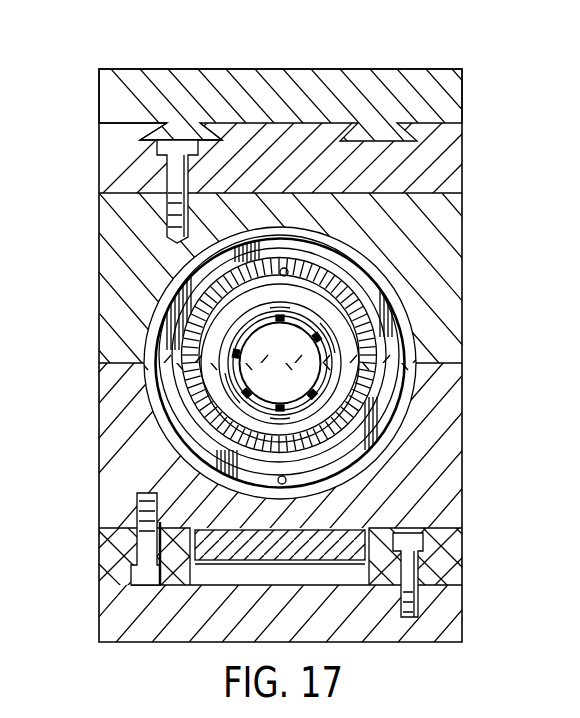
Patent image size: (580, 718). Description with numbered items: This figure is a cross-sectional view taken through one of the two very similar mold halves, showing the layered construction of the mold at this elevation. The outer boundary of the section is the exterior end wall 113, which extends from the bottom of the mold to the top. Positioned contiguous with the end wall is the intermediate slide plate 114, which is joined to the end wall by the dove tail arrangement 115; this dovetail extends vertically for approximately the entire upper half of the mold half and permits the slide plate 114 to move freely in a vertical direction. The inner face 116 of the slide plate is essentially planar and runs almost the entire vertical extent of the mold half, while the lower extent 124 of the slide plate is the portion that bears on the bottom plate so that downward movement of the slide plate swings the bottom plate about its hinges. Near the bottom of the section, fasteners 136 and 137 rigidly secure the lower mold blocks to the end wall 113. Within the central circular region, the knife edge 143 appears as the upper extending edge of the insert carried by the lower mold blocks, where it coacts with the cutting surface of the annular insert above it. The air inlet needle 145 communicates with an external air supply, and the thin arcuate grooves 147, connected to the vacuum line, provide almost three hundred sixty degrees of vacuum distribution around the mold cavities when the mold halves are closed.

The exterior end wall 113 is at (243, 69).
The intermediate slide plate 114 is at (98, 138).
The dove tail arrangement 115 is at (146, 133).
The inner face 116 is at (118, 128).
The lower extent 124 is at (338, 546).
The fastener 136 is at (147, 553).
The fastener 137 is at (406, 575).
The knife edge 143 is at (350, 390).
The air inlet needle 145 is at (283, 273).
The thin arcuate grooves 147 is at (357, 447).